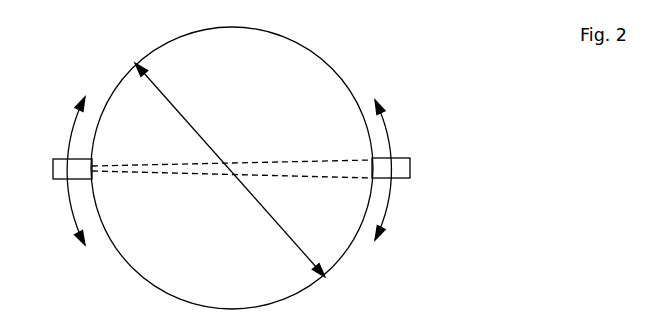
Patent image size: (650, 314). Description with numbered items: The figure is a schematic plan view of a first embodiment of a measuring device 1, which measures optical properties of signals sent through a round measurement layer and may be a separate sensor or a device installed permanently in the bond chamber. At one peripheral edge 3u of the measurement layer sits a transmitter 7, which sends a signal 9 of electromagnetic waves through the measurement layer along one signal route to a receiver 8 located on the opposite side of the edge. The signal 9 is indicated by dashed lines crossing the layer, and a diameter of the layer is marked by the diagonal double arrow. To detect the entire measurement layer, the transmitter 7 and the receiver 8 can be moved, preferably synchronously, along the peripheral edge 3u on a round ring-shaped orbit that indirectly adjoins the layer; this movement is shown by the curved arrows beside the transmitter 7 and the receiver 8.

The measuring device 1 is at (234, 157).
The peripheral edge 3u is at (323, 60).
The transmitter 7 is at (72, 169).
The receiver 8 is at (392, 167).
The signal 9 is at (337, 167).